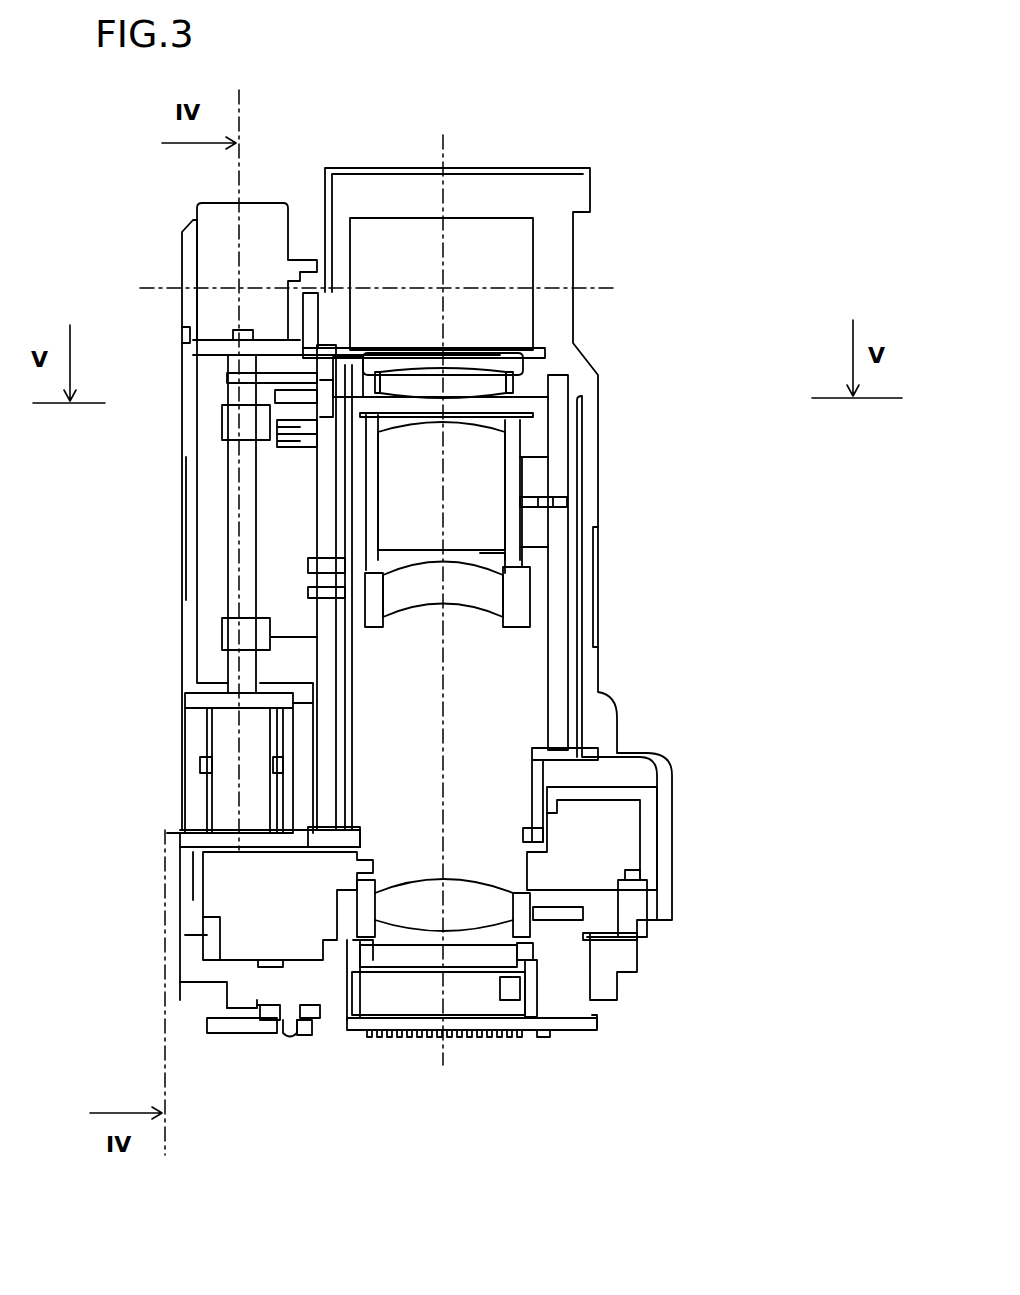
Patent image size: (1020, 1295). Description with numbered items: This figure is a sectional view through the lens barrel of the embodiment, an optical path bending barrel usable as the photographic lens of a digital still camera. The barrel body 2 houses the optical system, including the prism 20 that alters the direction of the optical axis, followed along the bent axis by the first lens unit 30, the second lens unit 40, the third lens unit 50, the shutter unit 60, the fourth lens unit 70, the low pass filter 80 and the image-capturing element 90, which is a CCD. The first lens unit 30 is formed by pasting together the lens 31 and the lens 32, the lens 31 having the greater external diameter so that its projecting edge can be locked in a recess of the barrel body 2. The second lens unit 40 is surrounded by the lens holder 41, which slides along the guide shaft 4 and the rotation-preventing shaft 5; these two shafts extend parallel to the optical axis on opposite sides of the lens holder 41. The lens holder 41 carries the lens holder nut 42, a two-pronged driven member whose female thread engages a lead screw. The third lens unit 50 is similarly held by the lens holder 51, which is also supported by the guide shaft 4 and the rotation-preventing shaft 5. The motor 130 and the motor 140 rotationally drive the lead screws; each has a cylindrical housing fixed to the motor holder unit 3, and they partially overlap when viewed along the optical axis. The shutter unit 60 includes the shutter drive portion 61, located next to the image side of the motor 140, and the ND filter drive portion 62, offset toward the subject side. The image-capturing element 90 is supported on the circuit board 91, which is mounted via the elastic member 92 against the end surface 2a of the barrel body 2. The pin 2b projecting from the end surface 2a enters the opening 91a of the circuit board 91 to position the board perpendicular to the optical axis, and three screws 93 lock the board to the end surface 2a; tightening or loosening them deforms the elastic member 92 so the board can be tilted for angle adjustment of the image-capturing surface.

The barrel body 2 is at (587, 683).
The end surface 2a is at (258, 1003).
The pin 2b is at (285, 1035).
The motor holder unit 3 is at (187, 623).
The guide shaft 4 is at (328, 494).
The rotation-preventing shaft 5 is at (558, 425).
The prism 20 is at (500, 240).
The first lens unit 30 is at (577, 358).
The lens 31 is at (506, 357).
The lens 32 is at (474, 382).
The second lens unit 40 is at (474, 459).
The lens holder 41 is at (517, 522).
The lens holder nut 42 is at (230, 424).
The third lens unit 50 is at (466, 590).
The lens holder 51 is at (512, 616).
The shutter unit 60 is at (515, 877).
The shutter drive portion 61 is at (288, 928).
The ND filter drive portion 62 is at (592, 855).
The fourth lens unit 70 is at (488, 920).
The low pass filter 80 is at (476, 950).
The image-capturing element 90 is at (498, 988).
The circuit board 91 is at (567, 1024).
The opening 91a is at (305, 1032).
The elastic member 92 is at (312, 1015).
The screws 93 is at (217, 1038).
The motor 130 is at (218, 256).
The motor 140 is at (228, 776).